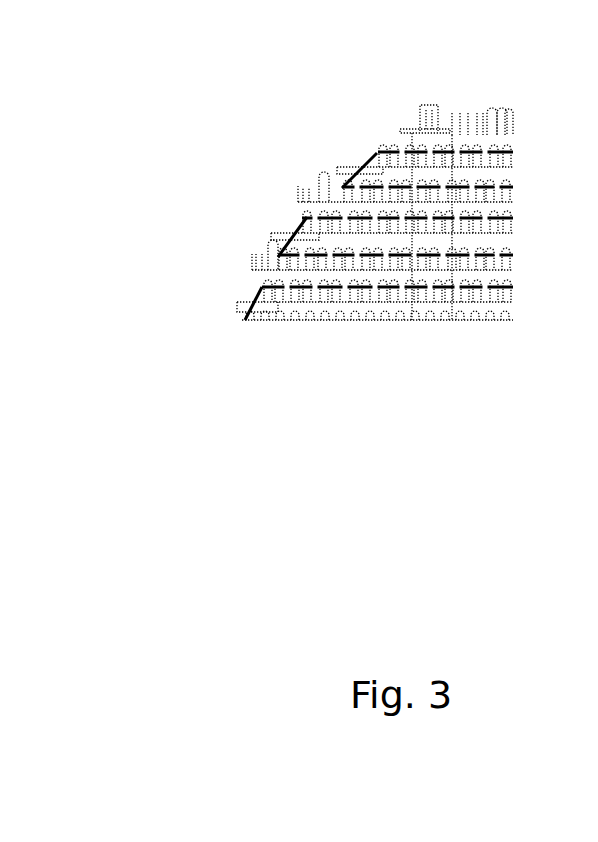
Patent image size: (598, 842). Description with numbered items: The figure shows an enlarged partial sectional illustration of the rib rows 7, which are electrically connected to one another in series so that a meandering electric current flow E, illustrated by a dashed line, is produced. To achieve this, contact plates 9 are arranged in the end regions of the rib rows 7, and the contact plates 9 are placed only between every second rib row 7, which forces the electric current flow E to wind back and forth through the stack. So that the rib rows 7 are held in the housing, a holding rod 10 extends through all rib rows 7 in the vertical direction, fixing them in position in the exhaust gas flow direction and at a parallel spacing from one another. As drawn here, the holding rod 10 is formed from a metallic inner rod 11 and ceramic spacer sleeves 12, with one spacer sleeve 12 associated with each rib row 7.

The rib rows 7 is at (511, 119).
The contact plates 9 is at (352, 165).
The holding rod 10 is at (427, 103).
The metallic inner rod 11 is at (433, 113).
The spacer sleeves 12 is at (437, 208).
The electric current flow E is at (505, 293).